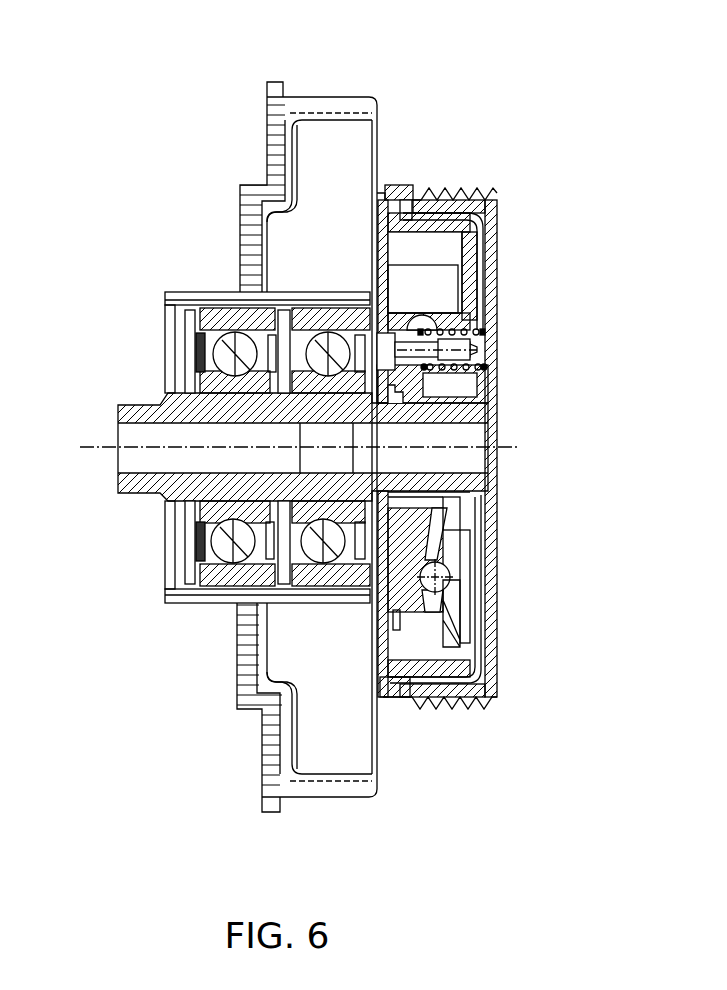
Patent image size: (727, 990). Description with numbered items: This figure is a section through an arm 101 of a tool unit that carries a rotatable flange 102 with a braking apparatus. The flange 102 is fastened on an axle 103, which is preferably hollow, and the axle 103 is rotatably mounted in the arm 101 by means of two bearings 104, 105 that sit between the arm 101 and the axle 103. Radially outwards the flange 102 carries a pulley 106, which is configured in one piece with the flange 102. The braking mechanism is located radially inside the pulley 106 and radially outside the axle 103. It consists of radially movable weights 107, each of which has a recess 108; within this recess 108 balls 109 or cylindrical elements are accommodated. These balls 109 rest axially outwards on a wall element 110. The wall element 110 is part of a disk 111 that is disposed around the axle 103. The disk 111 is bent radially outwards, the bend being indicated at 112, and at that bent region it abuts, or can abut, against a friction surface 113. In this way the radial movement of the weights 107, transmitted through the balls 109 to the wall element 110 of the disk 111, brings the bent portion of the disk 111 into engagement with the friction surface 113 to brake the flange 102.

The arm 101 is at (320, 108).
The flange 102 is at (480, 423).
The axle 103 is at (490, 412).
The bearing 104 is at (200, 515).
The bearing 105 is at (318, 553).
The pulley 106 is at (465, 190).
The weights 107 is at (407, 528).
The recess 108 is at (437, 545).
The balls 109 is at (452, 583).
The wall element 110 is at (445, 607).
The disk 111 is at (465, 305).
The radially outward bend 112 is at (386, 198).
The friction surface 113 is at (405, 205).